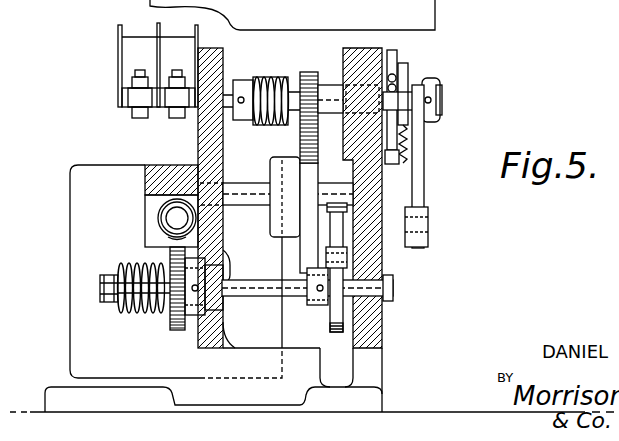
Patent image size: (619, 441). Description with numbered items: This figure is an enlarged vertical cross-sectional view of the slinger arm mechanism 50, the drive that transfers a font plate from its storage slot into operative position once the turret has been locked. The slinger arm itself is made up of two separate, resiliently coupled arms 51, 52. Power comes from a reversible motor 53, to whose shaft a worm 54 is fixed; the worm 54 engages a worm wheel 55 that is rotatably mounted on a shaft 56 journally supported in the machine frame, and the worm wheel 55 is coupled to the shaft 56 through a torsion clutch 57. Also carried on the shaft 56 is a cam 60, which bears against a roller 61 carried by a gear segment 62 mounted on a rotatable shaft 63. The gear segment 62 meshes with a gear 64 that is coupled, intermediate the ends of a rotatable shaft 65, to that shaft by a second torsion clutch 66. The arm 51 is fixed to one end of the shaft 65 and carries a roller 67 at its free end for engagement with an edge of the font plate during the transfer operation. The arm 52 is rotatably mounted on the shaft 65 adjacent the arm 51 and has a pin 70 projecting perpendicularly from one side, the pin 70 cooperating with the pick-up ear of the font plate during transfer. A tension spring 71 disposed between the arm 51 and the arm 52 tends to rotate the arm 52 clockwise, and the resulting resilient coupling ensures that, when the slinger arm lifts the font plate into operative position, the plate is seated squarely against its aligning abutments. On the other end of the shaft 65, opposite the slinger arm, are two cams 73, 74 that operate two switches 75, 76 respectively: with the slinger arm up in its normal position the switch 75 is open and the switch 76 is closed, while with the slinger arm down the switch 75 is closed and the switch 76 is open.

The slinger arm mechanism 50 is at (439, 149).
The arm 51 is at (418, 185).
The arm 52 is at (395, 125).
The reversible motor 53 is at (80, 230).
The worm 54 is at (168, 219).
The worm wheel 55 is at (170, 325).
The shaft 56 is at (260, 300).
The torsion clutch 57 is at (125, 312).
The cam 60 is at (328, 318).
The roller 61 is at (347, 262).
The gear segment 62 is at (310, 244).
The rotatable shaft 63 is at (333, 193).
The gear 64 is at (308, 78).
The rotatable shaft 65 is at (330, 92).
The second torsion clutch 66 is at (262, 76).
The roller 67 is at (425, 241).
The pin 70 is at (410, 162).
The tension spring 71 is at (392, 150).
The cam 73 is at (140, 115).
The cam 74 is at (177, 115).
The switch 75 is at (128, 58).
The switch 76 is at (175, 45).